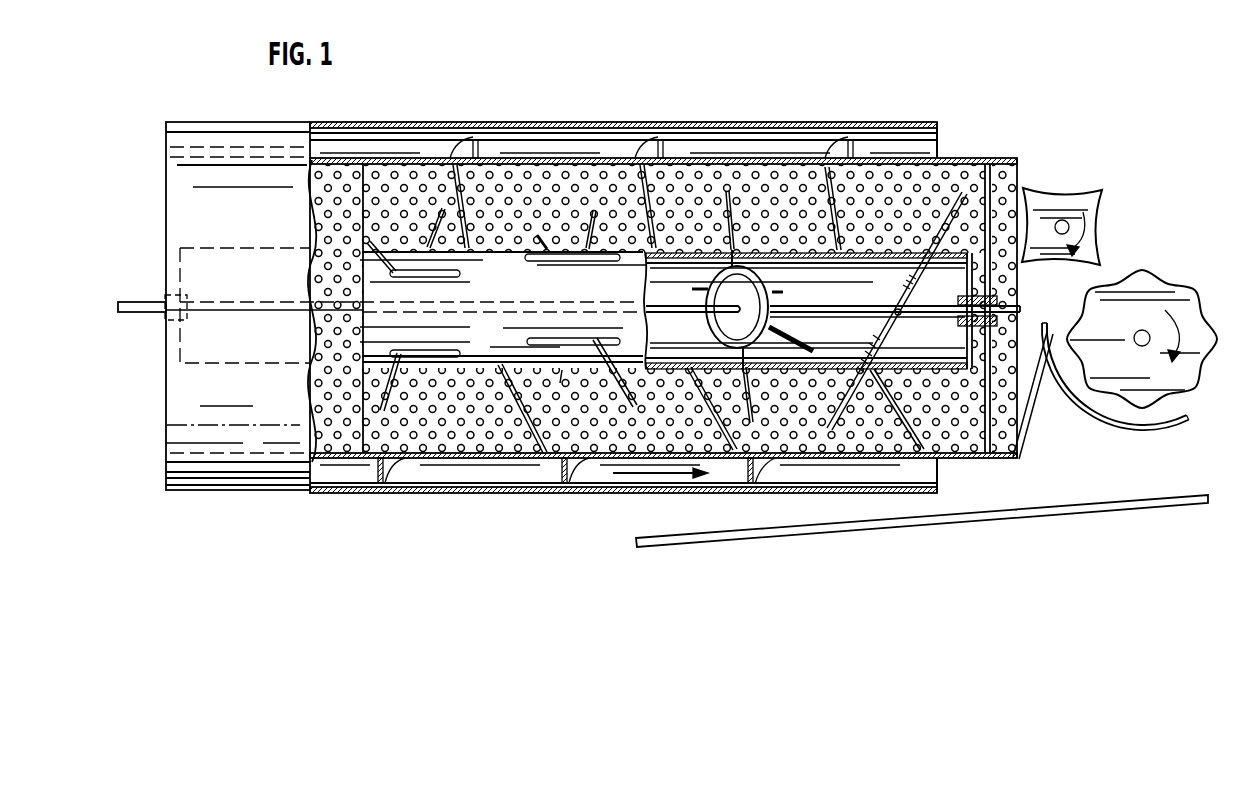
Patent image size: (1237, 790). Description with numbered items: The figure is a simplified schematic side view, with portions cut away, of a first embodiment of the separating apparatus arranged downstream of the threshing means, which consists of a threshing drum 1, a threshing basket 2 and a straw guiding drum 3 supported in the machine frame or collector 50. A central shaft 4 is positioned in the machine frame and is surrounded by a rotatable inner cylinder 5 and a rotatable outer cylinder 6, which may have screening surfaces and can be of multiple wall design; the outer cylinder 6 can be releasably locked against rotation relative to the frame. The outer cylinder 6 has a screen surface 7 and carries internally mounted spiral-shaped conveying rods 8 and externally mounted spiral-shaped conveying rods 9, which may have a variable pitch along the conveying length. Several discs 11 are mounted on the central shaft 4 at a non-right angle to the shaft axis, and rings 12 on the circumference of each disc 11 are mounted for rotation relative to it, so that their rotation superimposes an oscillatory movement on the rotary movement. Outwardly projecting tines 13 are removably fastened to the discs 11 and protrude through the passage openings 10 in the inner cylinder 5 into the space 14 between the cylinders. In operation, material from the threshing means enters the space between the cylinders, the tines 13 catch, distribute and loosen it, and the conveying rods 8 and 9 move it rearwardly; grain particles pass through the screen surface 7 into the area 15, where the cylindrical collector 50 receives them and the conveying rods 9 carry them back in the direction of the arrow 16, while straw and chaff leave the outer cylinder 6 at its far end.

The threshing drum 1 is at (1195, 298).
The threshing basket 2 is at (1157, 425).
The straw guiding drum 3 is at (1088, 206).
The central shaft 4 is at (146, 305).
The inner cylinder 5 is at (480, 270).
The outer cylinder 6 is at (946, 164).
The screen surface 7 is at (336, 455).
The internally mounted spiral-shaped conveying rods 8 is at (470, 395).
The externally mounted spiral-shaped conveying rods 9 is at (578, 460).
The passage openings 10 is at (568, 340).
The discs 11 is at (708, 325).
The rings 12 is at (772, 345).
The tines 13 is at (930, 212).
The space between the cylinders 14 is at (430, 457).
The area 15 is at (514, 472).
The arrow 16 is at (644, 474).
The machine frame or collector 50 is at (677, 492).